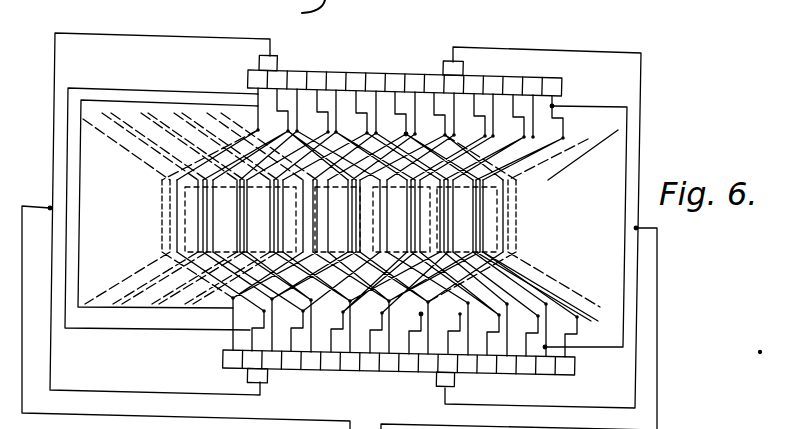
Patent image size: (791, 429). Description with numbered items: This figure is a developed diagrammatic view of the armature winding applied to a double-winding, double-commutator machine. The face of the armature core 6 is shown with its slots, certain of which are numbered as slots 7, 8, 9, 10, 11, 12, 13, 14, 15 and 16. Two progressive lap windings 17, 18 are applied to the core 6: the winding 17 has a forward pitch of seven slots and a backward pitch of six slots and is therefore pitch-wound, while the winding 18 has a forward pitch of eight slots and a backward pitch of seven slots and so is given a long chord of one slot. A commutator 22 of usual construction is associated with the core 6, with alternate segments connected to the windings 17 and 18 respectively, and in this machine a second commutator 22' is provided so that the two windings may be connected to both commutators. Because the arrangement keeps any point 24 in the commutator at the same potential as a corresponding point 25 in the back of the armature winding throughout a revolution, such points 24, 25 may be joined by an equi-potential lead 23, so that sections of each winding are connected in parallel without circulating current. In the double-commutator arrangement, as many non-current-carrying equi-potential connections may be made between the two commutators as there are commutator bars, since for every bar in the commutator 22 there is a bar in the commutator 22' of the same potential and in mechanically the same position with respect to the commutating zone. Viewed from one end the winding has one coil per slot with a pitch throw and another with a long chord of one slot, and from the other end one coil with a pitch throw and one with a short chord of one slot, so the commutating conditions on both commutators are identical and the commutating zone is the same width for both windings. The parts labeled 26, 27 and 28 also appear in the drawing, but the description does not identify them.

The armature core 6 is at (339, 231).
The slot 7 is at (165, 235).
The slot 8 is at (205, 237).
The slot 9 is at (243, 237).
The slot 10 is at (283, 228).
The slot 11 is at (312, 242).
The slot 12 is at (350, 233).
The slot 13 is at (395, 242).
The slot 14 is at (430, 242).
The slot 15 is at (460, 235).
The slot 16 is at (513, 250).
The winding 17 is at (342, 247).
The winding 18 is at (190, 150).
The commutator 22 is at (398, 378).
The commutator 22' is at (408, 75).
The equi-potential lead 23 is at (182, 312).
The point in the commutator 24 is at (262, 312).
The point in the back of the armature winding 25 is at (410, 114).
The middle frame conductor 26 is at (137, 330).
The lower terminal connection 27 is at (404, 340).
The upper terminal connection 28 is at (405, 110).